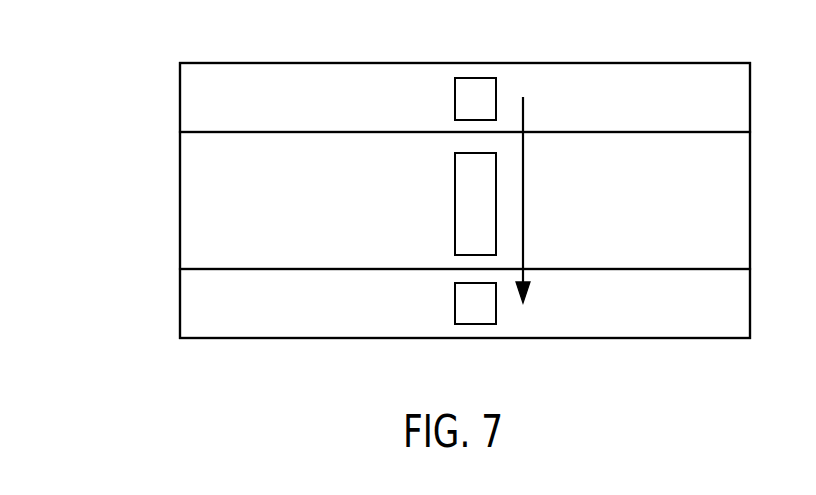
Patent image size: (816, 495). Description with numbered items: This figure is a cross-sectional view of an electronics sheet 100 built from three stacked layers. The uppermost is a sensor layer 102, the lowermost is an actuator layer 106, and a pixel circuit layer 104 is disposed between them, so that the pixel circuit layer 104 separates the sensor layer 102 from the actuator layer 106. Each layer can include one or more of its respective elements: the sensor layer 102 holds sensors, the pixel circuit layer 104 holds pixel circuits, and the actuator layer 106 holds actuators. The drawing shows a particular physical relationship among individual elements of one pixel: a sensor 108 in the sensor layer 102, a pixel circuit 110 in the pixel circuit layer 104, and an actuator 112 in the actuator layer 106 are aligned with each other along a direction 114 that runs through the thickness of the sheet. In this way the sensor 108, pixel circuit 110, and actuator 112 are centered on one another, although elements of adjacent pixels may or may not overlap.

The electronics sheet 100 is at (125, 43).
The sensor layer 102 is at (180, 90).
The pixel circuit layer 104 is at (180, 192).
The actuator layer 106 is at (180, 296).
The sensor 108 is at (455, 100).
The pixel circuit 110 is at (455, 196).
The actuator 112 is at (455, 305).
The direction 114 is at (523, 192).